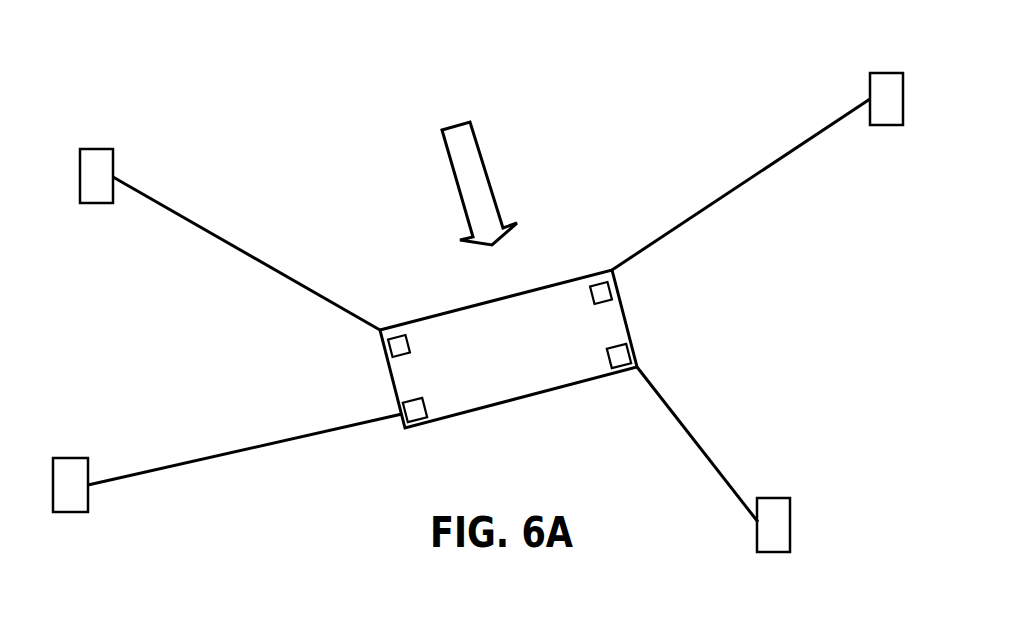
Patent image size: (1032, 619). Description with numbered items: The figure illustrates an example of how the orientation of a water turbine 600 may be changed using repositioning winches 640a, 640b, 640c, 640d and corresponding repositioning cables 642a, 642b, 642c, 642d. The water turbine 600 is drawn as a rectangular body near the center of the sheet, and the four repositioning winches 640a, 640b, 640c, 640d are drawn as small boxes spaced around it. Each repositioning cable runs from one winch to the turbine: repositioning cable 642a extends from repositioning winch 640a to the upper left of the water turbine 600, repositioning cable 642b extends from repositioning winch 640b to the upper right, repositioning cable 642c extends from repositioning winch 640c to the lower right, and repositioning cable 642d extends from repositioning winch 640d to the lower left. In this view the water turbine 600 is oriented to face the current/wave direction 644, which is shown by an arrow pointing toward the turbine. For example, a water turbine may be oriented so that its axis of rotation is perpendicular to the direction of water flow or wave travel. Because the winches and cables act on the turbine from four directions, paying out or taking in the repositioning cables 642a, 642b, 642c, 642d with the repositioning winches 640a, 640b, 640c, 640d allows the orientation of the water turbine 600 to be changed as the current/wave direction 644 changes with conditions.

The water turbine 600 is at (627, 320).
The current/wave direction 644 is at (470, 147).
The repositioning winch 640a is at (98, 152).
The repositioning winch 640b is at (892, 80).
The repositioning winch 640c is at (772, 500).
The repositioning winch 640d is at (72, 457).
The repositioning cable 642a is at (193, 220).
The repositioning cable 642b is at (752, 170).
The repositioning cable 642c is at (697, 448).
The repositioning cable 642d is at (332, 427).